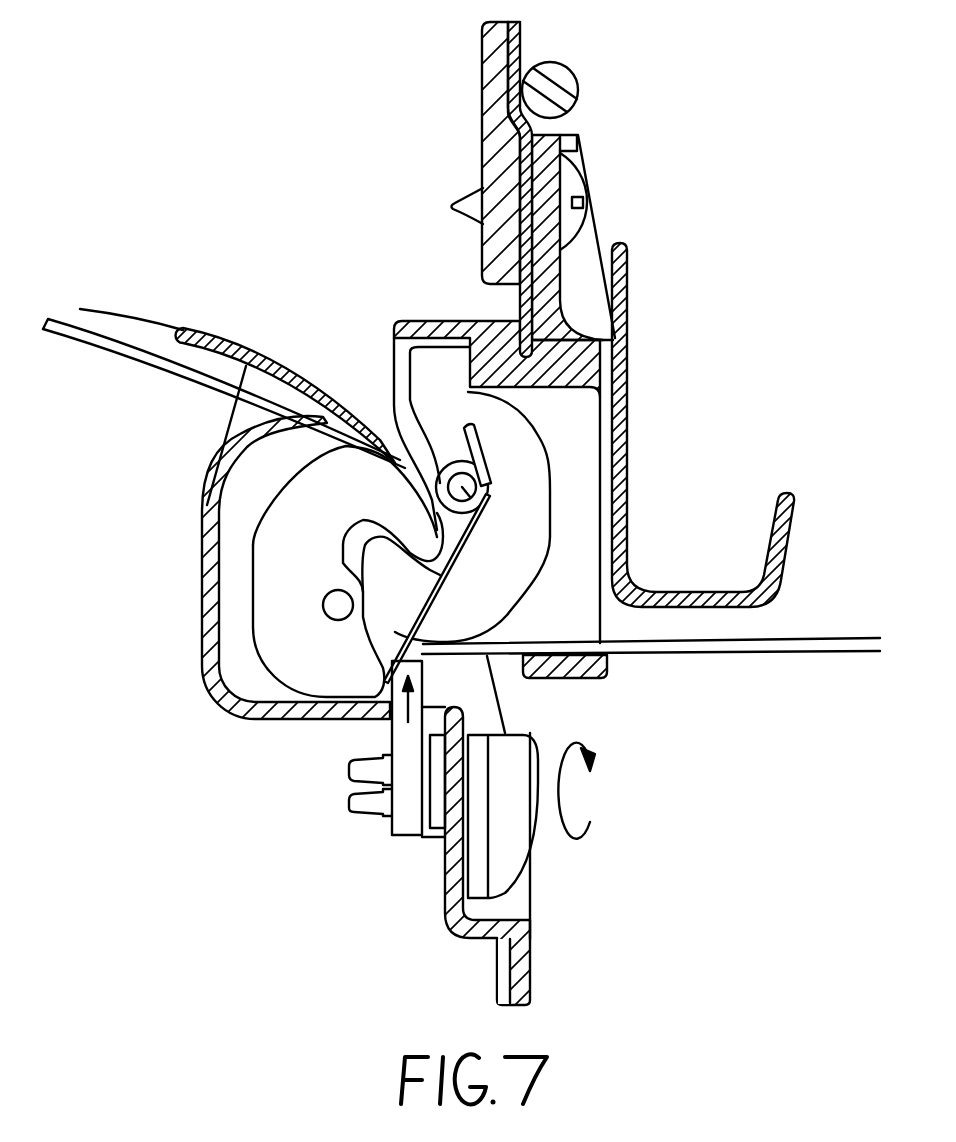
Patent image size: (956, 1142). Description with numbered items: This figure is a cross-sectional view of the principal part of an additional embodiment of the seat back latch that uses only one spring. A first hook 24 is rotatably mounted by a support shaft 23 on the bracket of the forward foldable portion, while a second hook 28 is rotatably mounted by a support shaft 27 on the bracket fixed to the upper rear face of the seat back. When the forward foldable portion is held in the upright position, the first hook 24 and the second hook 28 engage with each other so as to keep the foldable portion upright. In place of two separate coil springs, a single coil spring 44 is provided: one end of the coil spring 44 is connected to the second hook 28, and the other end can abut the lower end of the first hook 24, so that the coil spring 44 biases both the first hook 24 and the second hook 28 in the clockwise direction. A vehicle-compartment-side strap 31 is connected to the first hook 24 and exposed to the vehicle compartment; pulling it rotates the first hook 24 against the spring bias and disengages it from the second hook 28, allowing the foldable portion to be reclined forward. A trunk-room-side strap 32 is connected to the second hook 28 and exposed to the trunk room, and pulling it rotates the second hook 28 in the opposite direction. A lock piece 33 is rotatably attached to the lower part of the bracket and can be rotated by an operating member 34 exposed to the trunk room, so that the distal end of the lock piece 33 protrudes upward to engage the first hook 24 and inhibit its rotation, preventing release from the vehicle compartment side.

The support shaft 23 is at (333, 602).
The first hook 24 is at (277, 513).
The support shaft 27 is at (477, 507).
The second hook 28 is at (515, 437).
The vehicle-compartment-side strap 31 is at (88, 343).
The trunk-room-side strap 32 is at (820, 650).
The lock piece 33 is at (402, 815).
The operating member 34 is at (520, 857).
The coil spring 44 is at (438, 583).